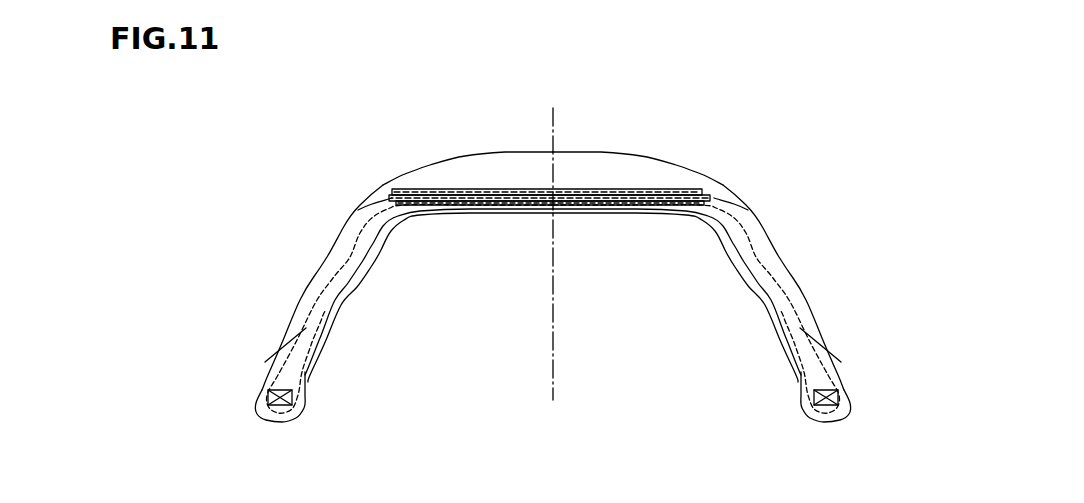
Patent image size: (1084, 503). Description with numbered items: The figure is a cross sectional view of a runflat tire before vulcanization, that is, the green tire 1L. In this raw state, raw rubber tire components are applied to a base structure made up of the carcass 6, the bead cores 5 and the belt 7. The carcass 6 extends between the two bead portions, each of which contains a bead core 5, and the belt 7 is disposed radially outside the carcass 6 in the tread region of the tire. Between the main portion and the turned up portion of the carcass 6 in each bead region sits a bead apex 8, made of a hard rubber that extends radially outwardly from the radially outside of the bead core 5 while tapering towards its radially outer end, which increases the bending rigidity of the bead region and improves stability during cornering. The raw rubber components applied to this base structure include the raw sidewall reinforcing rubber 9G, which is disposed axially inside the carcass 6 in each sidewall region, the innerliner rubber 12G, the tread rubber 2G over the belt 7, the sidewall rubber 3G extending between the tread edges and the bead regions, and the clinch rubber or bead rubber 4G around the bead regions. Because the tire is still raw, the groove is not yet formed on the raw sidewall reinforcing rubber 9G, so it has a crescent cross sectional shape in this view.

The green tire 1L is at (378, 132).
The tread rubber 2G is at (480, 157).
The sidewall rubber 3G is at (342, 245).
The clinch rubber 4G is at (263, 373).
The bead core 5 is at (273, 404).
The carcass 6 is at (500, 206).
The belt 7 is at (567, 206).
The bead apex 8 is at (306, 328).
The raw sidewall reinforcing rubber 9G is at (340, 288).
The innerliner rubber 12G is at (428, 207).